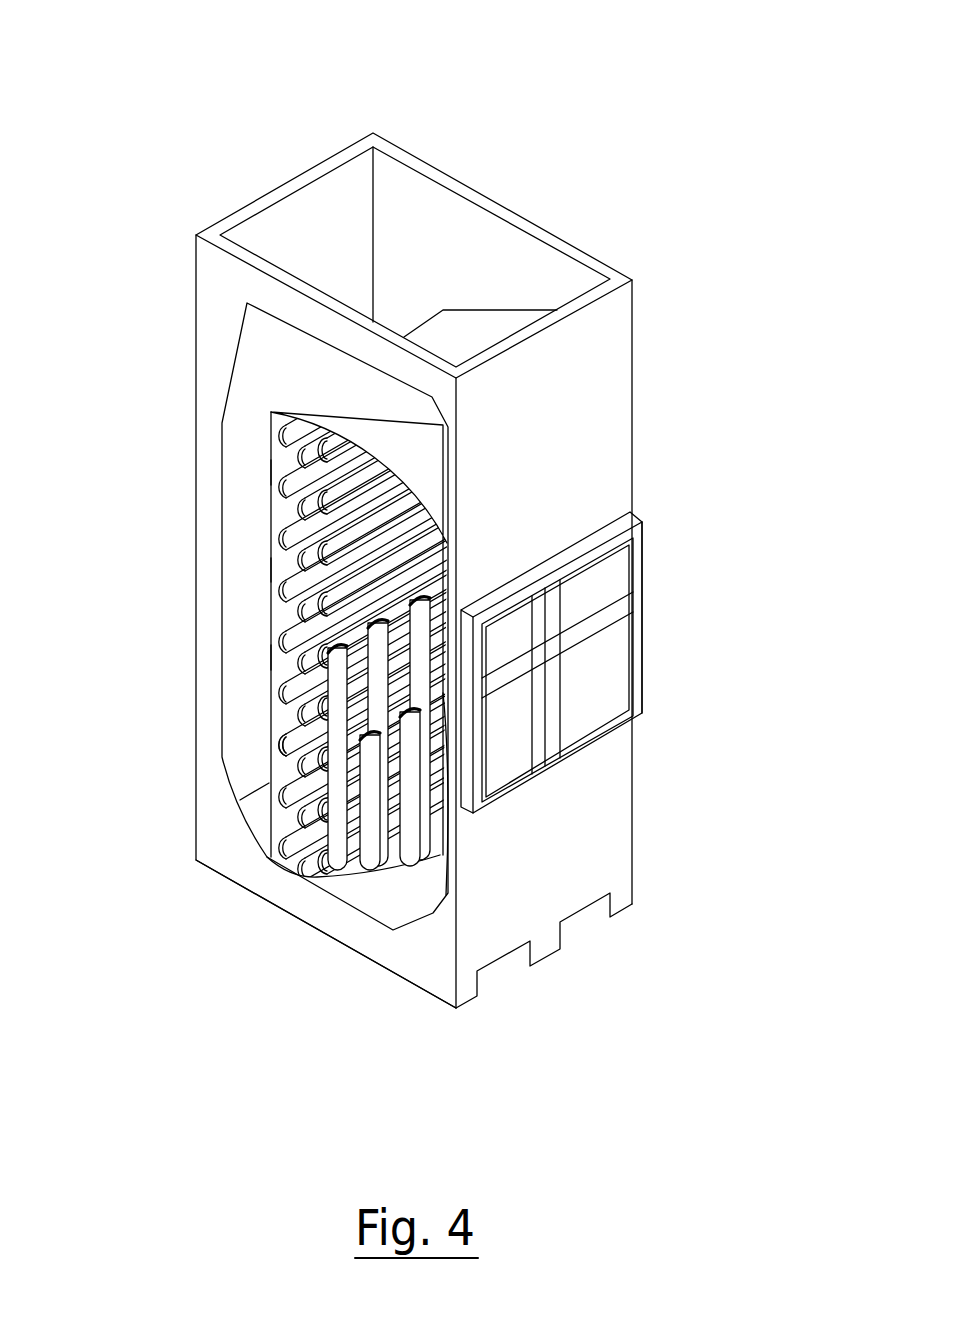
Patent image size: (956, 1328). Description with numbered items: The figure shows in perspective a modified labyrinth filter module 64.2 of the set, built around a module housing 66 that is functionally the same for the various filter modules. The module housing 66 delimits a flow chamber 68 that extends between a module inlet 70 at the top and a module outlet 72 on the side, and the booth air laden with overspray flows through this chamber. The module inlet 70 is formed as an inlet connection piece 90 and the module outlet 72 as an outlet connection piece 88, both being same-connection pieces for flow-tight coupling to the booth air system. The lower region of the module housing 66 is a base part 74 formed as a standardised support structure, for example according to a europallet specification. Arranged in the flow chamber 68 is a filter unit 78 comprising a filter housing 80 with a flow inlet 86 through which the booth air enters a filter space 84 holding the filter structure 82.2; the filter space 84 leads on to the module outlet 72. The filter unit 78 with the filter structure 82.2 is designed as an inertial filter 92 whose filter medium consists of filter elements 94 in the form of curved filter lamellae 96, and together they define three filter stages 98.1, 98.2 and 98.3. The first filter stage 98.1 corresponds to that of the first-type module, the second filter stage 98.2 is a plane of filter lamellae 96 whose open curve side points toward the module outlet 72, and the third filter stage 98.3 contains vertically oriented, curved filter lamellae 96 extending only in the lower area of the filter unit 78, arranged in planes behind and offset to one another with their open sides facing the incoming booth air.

The inlet connection piece 90 is at (333, 152).
The module inlet 70 is at (285, 198).
The labyrinth filter module 64.2 is at (535, 228).
The module housing 66 is at (607, 395).
The flow chamber 68 is at (250, 350).
The base part 74 is at (305, 910).
The filter unit 78 is at (425, 465).
The filter housing 80 is at (446, 498).
The filter lamellae 96 is at (272, 538).
The flow inlet 86 is at (290, 713).
The filter space 84 is at (393, 823).
The inertial filter 92 is at (255, 473).
The filter elements 94 is at (260, 570).
The filter structure 82.2 is at (256, 657).
The module outlet 72 is at (600, 580).
The outlet connection piece 88 is at (642, 602).
The first filter stage 98.1 is at (302, 410).
The second filter stage 98.2 is at (339, 415).
The third filter stage 98.3 is at (399, 878).